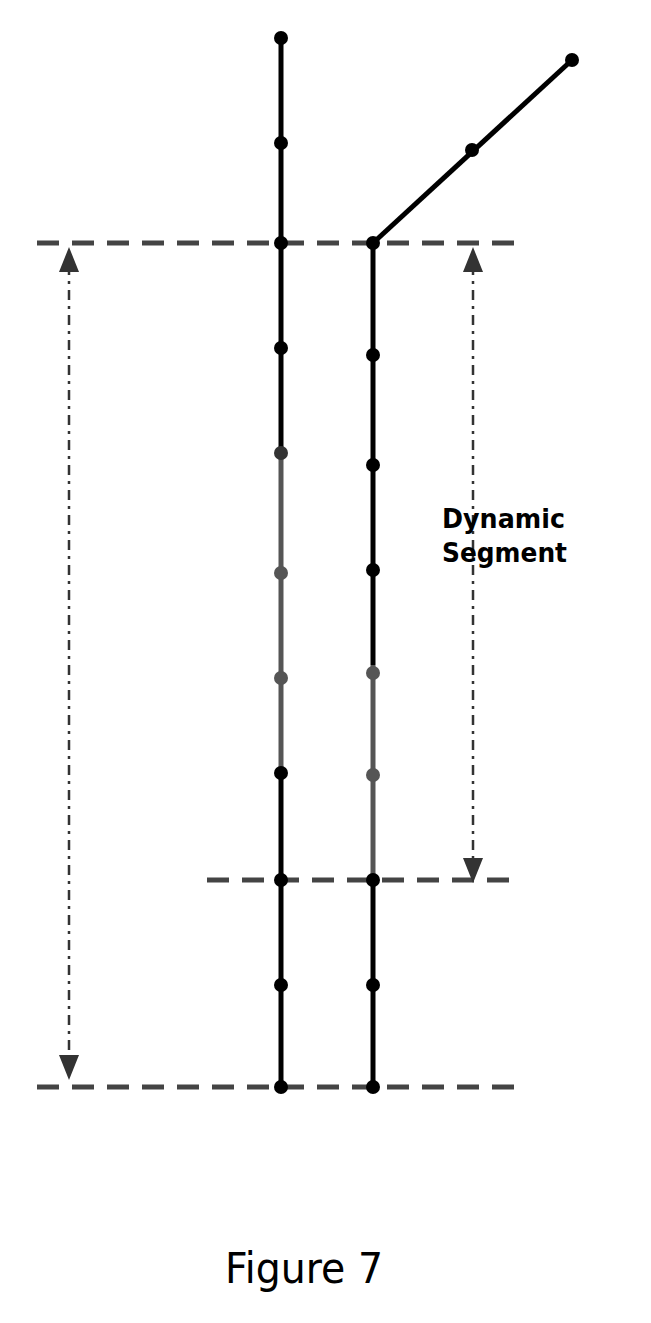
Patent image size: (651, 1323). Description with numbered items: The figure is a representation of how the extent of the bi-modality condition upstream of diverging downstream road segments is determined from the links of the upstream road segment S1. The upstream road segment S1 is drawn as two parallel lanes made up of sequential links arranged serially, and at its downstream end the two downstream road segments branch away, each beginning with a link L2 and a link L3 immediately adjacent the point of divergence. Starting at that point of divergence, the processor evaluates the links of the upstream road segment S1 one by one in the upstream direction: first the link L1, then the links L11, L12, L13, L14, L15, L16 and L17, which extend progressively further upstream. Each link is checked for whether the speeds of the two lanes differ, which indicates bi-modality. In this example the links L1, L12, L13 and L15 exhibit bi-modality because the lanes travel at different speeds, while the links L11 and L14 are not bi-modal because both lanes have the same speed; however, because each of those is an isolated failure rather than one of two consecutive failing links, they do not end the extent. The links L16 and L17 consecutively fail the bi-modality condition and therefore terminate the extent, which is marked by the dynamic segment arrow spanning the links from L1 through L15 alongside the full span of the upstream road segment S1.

The link L1 is at (327, 295).
The link L2 is at (257, 137).
The link L3 is at (476, 148).
The link L11 is at (327, 403).
The link L12 is at (327, 509).
The link L13 is at (327, 620).
The link L14 is at (327, 720).
The link L15 is at (327, 823).
The link L16 is at (327, 929).
The link L17 is at (327, 1036).
The upstream road segment S1 is at (69, 663).